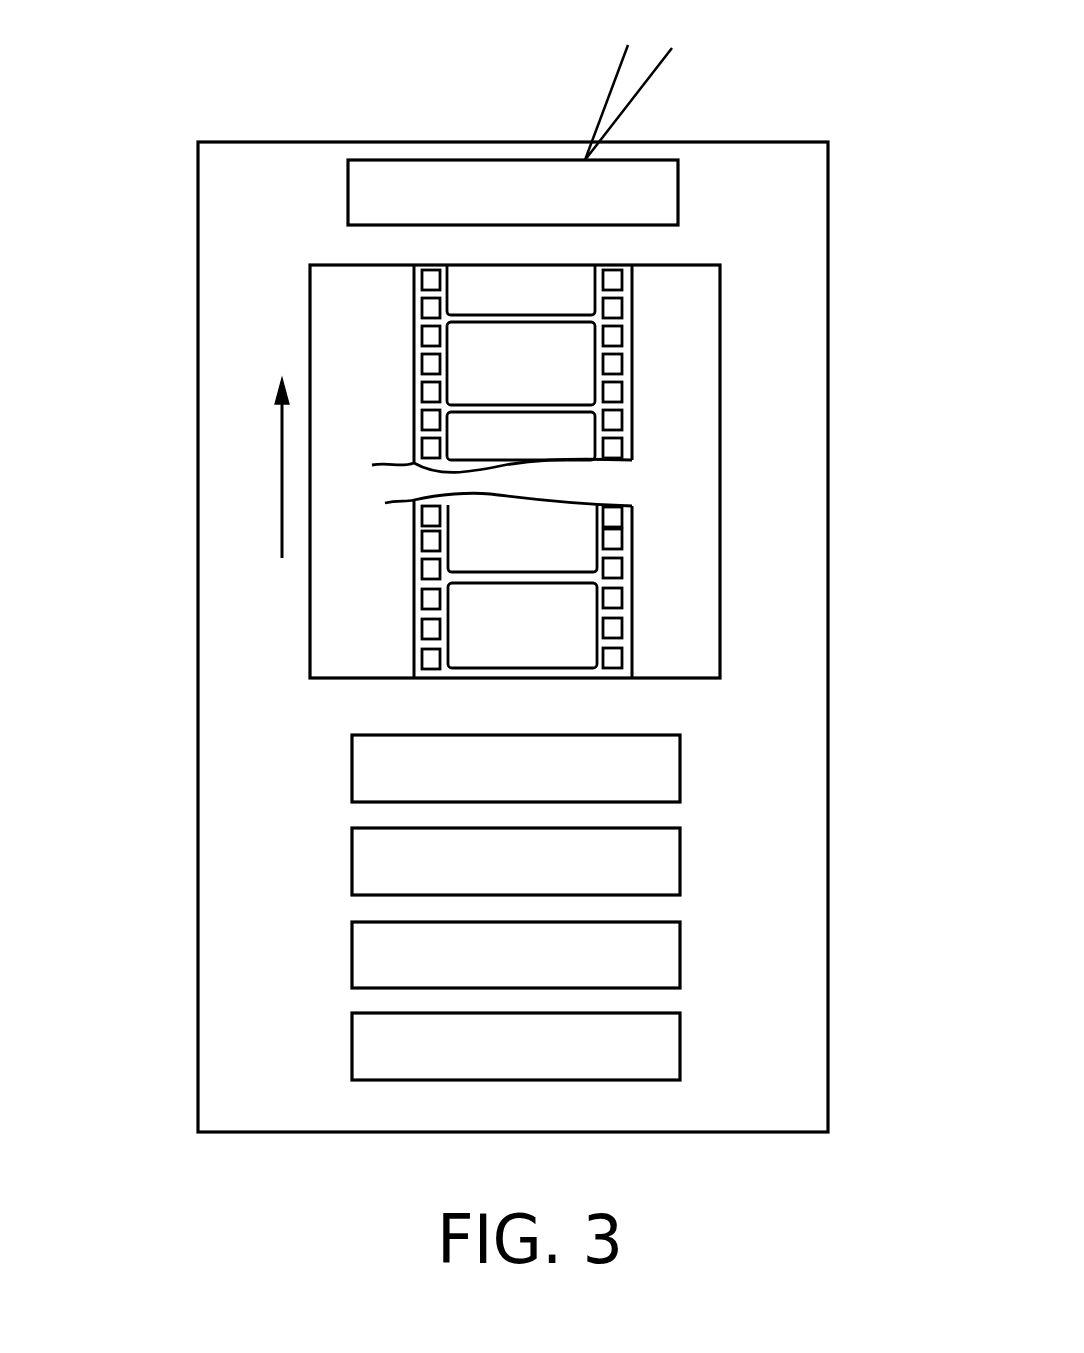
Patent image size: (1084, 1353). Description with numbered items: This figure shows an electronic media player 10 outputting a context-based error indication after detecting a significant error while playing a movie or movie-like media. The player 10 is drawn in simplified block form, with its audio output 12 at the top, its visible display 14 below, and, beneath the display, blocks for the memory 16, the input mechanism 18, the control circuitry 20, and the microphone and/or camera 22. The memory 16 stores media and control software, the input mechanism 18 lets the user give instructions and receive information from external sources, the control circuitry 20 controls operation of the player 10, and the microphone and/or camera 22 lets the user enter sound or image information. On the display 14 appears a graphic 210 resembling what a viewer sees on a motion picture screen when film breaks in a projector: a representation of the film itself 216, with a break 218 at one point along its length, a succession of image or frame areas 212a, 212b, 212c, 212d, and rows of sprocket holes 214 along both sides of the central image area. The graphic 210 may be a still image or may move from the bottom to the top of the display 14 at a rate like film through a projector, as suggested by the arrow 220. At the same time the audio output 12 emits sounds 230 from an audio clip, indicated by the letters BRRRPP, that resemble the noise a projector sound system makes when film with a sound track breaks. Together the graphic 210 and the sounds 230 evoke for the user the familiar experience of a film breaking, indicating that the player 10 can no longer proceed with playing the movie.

The electronic media player 10 is at (198, 281).
The audio output 12 is at (678, 192).
The visible display 14 is at (720, 412).
The memory 16 is at (680, 767).
The input mechanism 18 is at (680, 855).
The control circuitry 20 is at (680, 942).
The microphone and/or camera 22 is at (680, 1028).
The graphic 210 is at (389, 554).
The frame area 212a is at (559, 304).
The frame area 212b is at (559, 378).
The frame area 212c is at (559, 458).
The frame area 212d is at (559, 646).
The sprocket holes 214 is at (420, 422).
The film 216 is at (630, 440).
The break 218 is at (476, 485).
The arrow 220 is at (282, 455).
The sounds 230 is at (758, 55).